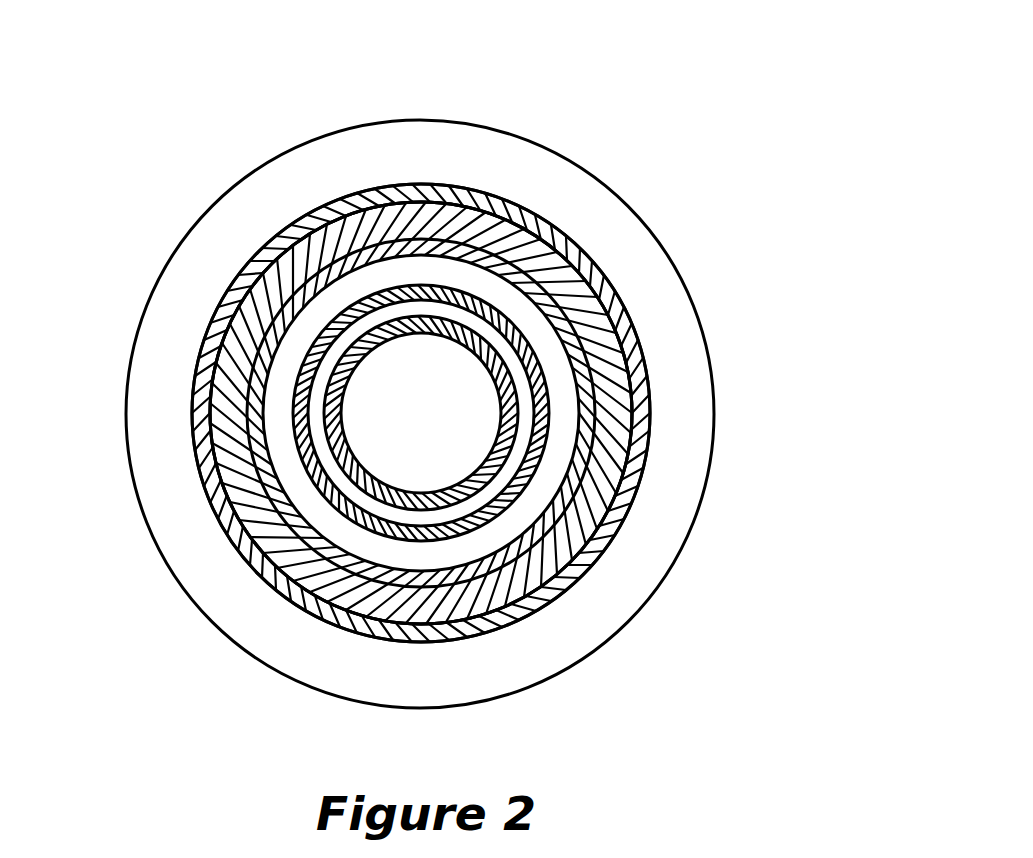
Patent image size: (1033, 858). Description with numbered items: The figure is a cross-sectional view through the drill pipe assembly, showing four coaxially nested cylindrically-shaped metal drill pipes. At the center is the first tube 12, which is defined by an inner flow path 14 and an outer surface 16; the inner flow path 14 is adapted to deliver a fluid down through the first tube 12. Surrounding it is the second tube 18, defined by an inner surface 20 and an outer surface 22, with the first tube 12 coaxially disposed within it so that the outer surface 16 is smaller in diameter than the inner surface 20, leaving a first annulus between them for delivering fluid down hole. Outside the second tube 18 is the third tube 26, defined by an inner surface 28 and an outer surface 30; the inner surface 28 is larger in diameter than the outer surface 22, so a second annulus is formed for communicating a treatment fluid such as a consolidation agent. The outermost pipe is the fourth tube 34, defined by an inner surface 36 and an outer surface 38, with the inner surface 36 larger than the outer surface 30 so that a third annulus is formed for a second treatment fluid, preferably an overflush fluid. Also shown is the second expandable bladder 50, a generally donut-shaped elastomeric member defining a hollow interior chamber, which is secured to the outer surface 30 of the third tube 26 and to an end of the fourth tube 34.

The first tube 12 is at (367, 346).
The inner flow path 14 is at (430, 372).
The outer surface 16 is at (535, 376).
The second tube 18 is at (307, 362).
The inner surface 20 is at (572, 424).
The outer surface 22 is at (590, 468).
The third tube 26 is at (252, 397).
The inner surface 28 is at (560, 402).
The outer surface 30 is at (632, 472).
The fourth tube 34 is at (209, 471).
The inner surface 36 is at (612, 505).
The outer surface 38 is at (617, 547).
The second expandable bladder 50 is at (470, 600).